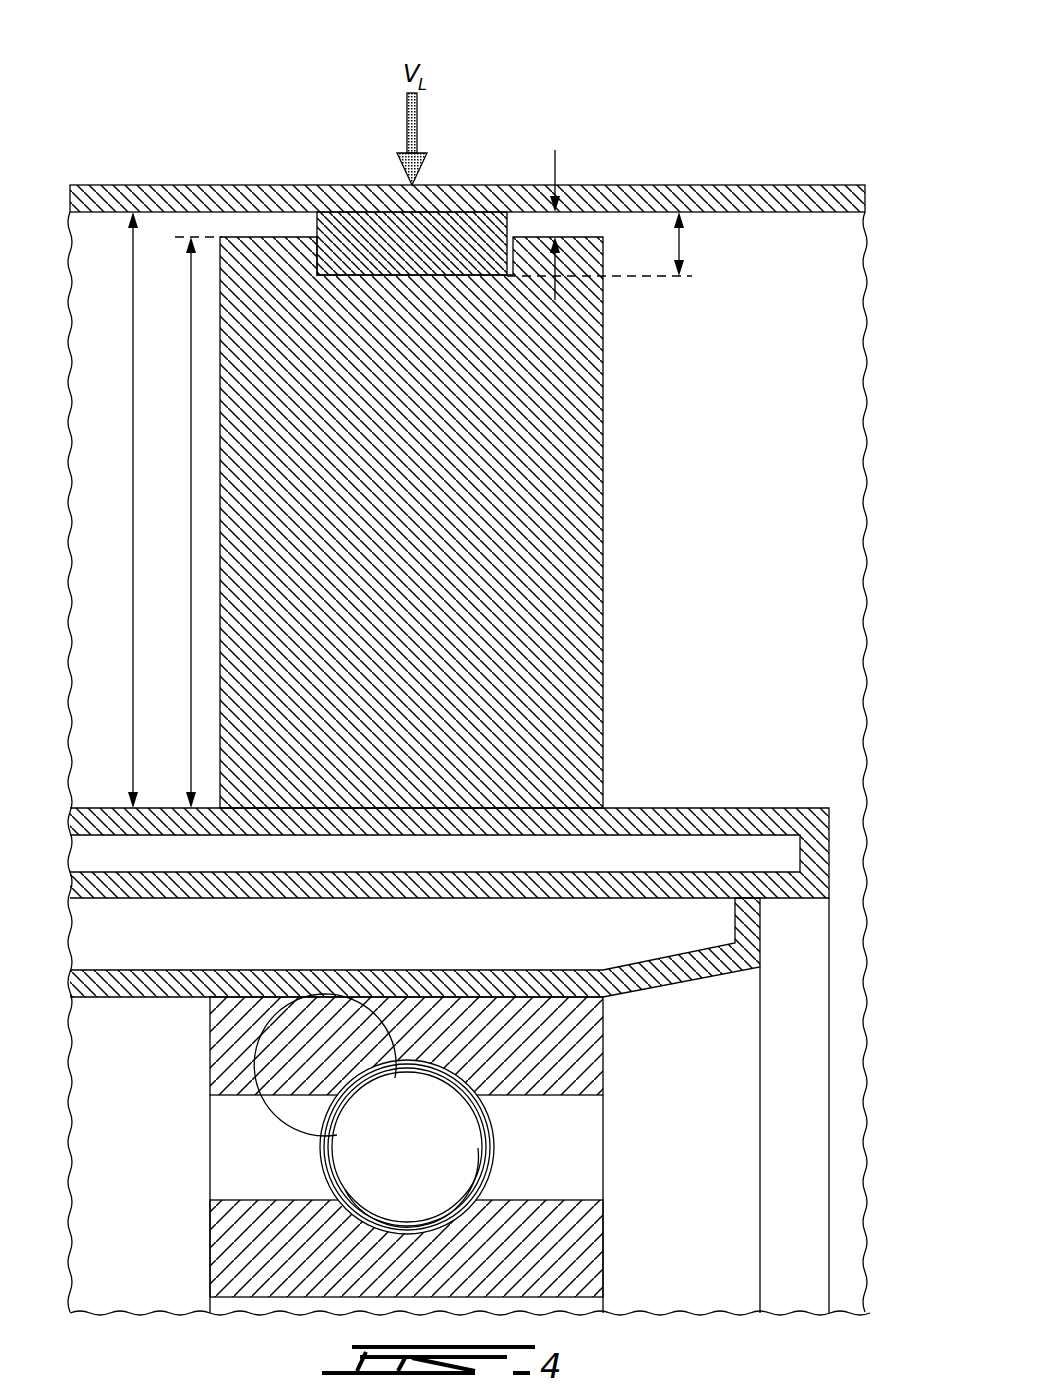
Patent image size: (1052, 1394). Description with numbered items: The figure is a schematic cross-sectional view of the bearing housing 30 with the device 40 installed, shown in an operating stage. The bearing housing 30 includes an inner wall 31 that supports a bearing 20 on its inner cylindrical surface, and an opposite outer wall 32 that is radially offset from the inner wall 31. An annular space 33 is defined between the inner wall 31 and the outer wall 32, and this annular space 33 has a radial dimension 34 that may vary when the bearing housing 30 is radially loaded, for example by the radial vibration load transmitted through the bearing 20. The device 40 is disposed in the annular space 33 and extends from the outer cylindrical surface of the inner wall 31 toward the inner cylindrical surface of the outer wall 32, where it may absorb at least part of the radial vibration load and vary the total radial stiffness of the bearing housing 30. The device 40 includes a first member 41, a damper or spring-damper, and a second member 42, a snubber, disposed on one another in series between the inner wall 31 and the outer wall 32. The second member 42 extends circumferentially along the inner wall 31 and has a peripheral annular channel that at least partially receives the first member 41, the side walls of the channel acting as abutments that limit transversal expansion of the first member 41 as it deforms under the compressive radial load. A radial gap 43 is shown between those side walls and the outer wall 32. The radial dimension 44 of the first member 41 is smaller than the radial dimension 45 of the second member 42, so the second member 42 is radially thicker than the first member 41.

The bearing 20 is at (668, 1158).
The bearing housing 30 is at (176, 132).
The inner wall 31 is at (714, 830).
The outer wall 32 is at (785, 200).
The annular space 33 is at (112, 321).
The radial dimension 34 is at (133, 521).
The device 40 is at (830, 374).
The first member 41 is at (343, 215).
The second member 42 is at (535, 555).
The radial gap 43 is at (558, 224).
The radial dimension 44 is at (690, 244).
The radial dimension 45 is at (191, 521).